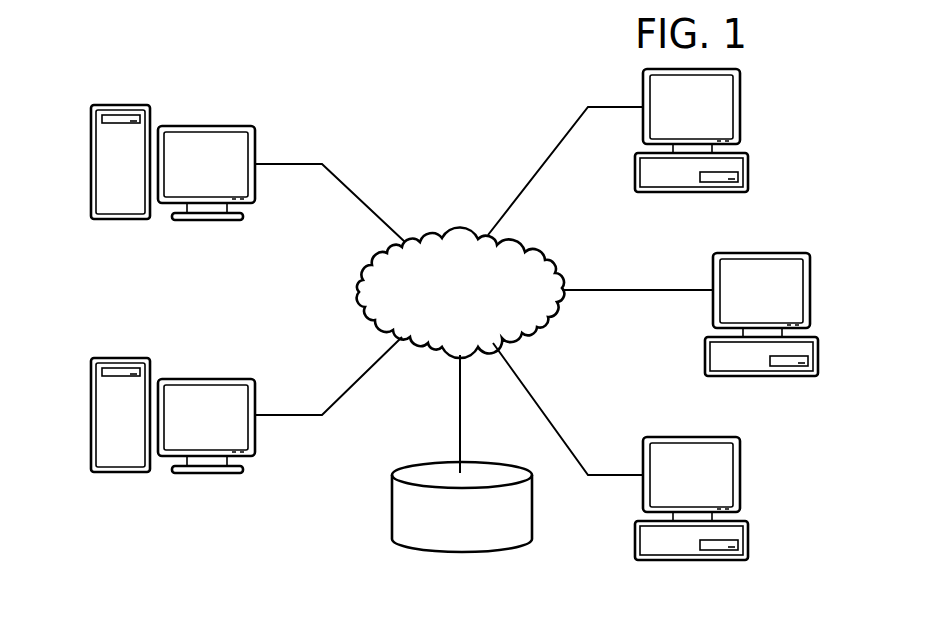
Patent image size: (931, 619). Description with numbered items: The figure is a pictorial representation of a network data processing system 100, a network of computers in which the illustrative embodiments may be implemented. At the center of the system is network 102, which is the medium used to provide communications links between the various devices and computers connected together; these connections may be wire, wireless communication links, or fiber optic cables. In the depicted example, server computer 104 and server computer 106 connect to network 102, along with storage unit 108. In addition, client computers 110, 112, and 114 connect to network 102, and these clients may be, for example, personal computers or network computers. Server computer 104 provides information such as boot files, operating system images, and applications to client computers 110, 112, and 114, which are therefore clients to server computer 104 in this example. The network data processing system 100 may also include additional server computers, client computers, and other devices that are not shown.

The network data processing system 100 is at (325, 73).
The network 102 is at (456, 229).
The server computer 104 is at (91, 152).
The server computer 106 is at (91, 425).
The storage unit 108 is at (391, 510).
The client computer 110 is at (748, 177).
The client computer 112 is at (818, 357).
The client computer 114 is at (748, 545).